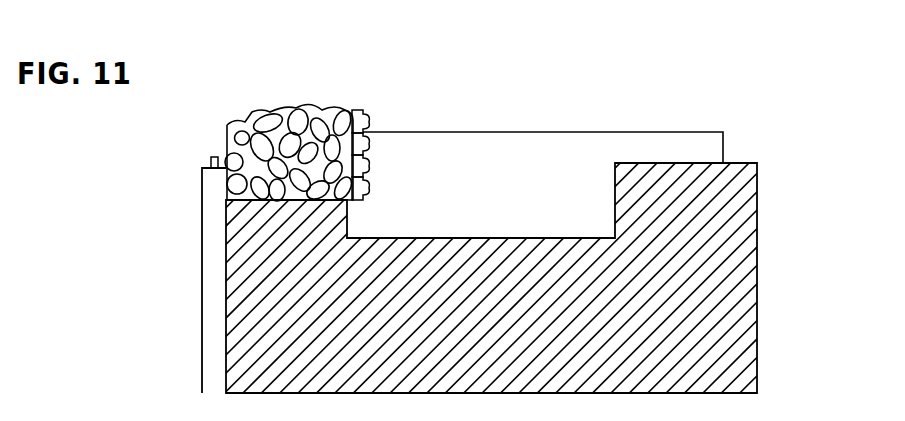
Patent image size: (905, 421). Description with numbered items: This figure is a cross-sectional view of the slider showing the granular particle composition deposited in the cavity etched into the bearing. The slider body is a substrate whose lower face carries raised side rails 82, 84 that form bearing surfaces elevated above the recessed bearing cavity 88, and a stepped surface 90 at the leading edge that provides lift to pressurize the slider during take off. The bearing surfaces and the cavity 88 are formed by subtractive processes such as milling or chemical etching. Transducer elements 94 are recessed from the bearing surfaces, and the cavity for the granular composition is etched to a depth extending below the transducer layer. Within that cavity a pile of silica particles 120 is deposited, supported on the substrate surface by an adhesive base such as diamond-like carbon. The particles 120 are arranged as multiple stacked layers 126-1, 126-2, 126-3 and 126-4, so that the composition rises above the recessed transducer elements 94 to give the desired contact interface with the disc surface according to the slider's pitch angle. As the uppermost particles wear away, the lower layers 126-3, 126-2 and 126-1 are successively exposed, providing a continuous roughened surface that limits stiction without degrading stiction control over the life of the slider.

The recessed bearing cavity 88 is at (480, 238).
The transducer elements 94 is at (212, 155).
The raised side rail 82 is at (543, 105).
The raised side rail 84 is at (570, 128).
The stepped surface 90 is at (723, 163).
The particles 120 is at (314, 106).
The first particle layer 126-1 is at (368, 188).
The second particle layer 126-2 is at (368, 166).
The third particle layer 126-3 is at (373, 138).
The fourth particle layer 126-4 is at (370, 118).